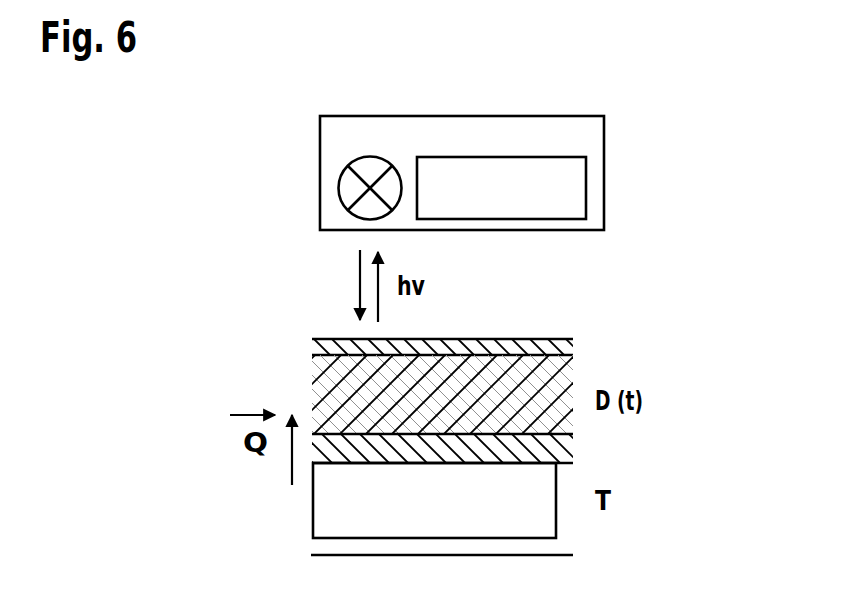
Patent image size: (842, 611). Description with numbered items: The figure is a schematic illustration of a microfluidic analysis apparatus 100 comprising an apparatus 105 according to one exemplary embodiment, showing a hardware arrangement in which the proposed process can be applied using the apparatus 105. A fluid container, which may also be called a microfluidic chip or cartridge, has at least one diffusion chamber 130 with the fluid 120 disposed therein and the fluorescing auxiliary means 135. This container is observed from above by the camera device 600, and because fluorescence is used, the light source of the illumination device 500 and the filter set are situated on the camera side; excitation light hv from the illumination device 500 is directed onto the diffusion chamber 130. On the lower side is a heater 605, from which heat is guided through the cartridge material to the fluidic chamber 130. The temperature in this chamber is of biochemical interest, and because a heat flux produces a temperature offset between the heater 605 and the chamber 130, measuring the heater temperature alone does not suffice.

The microfluidic analysis apparatus 100 is at (340, 145).
The illumination device 500 is at (339, 199).
The apparatus 105 is at (581, 188).
The camera device 600 is at (586, 200).
The diffusion chamber 130 is at (340, 346).
The fluid 120 is at (417, 394).
The fluorescing auxiliary means 135 is at (340, 383).
The heater 605 is at (340, 503).